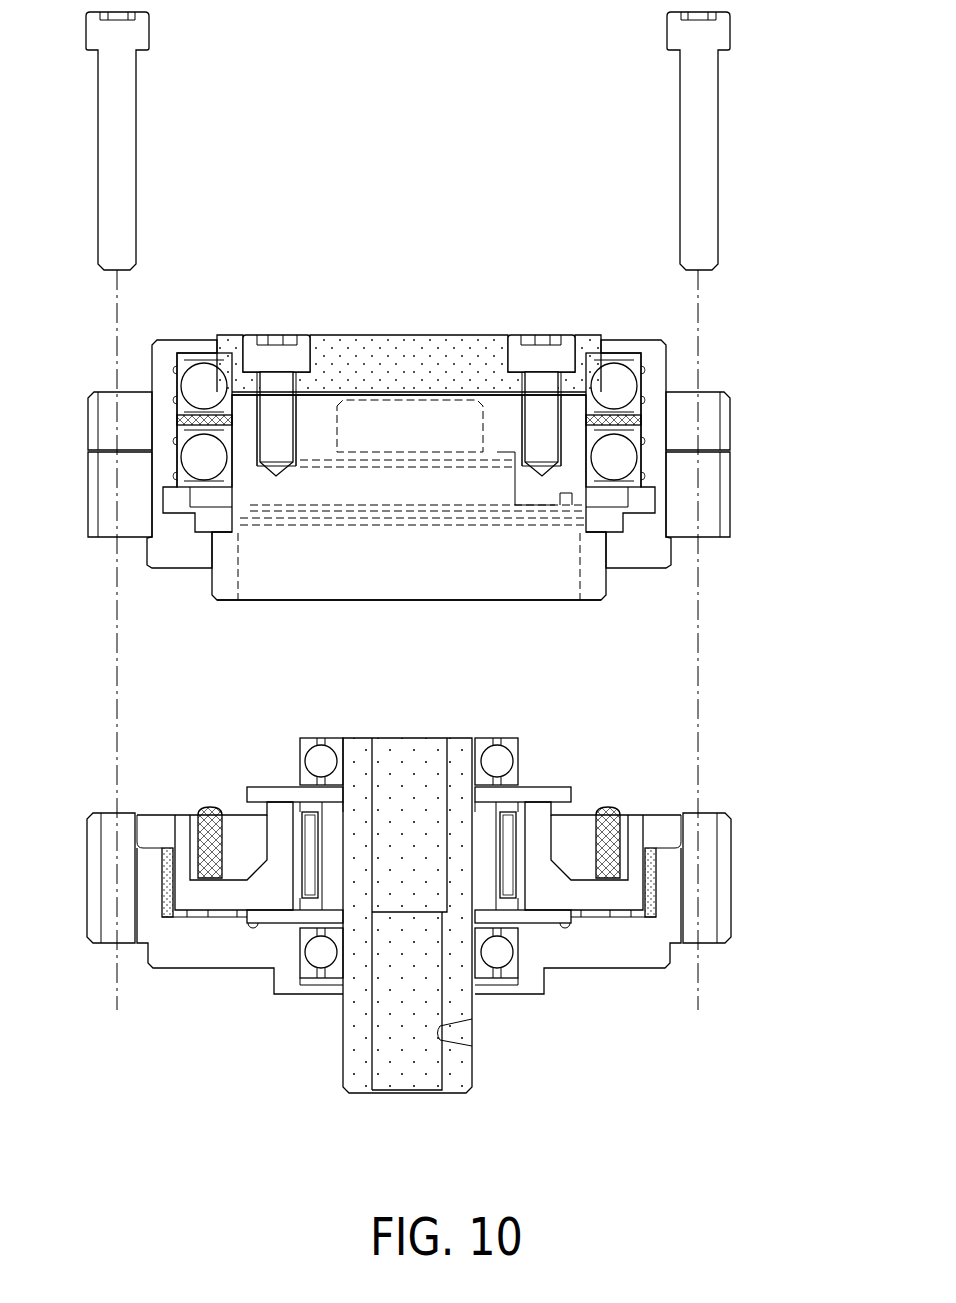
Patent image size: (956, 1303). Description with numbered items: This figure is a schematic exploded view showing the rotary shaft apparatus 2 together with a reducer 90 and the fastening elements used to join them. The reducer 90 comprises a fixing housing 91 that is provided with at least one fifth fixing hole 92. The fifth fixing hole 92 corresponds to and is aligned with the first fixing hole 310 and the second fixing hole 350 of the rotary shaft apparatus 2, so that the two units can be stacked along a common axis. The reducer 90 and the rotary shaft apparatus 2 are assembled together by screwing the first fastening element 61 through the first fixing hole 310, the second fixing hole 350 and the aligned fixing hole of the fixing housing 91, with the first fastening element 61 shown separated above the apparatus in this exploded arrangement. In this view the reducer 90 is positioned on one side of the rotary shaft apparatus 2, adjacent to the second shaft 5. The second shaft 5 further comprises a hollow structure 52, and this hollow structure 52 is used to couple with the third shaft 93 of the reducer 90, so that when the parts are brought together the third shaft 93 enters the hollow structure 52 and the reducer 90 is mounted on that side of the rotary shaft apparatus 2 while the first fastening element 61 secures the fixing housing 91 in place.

The rotary shaft apparatus 2 is at (770, 347).
The first fixing hole 310 is at (117, 428).
The second fixing hole 350 is at (117, 505).
The second shaft 5 is at (570, 465).
The hollow structure 52 is at (480, 550).
The first fastening element 61 is at (697, 137).
The reducer 90 is at (763, 762).
The fixing housing 91 is at (593, 953).
The fifth fixing hole 92 is at (118, 847).
The third shaft 93 is at (405, 770).